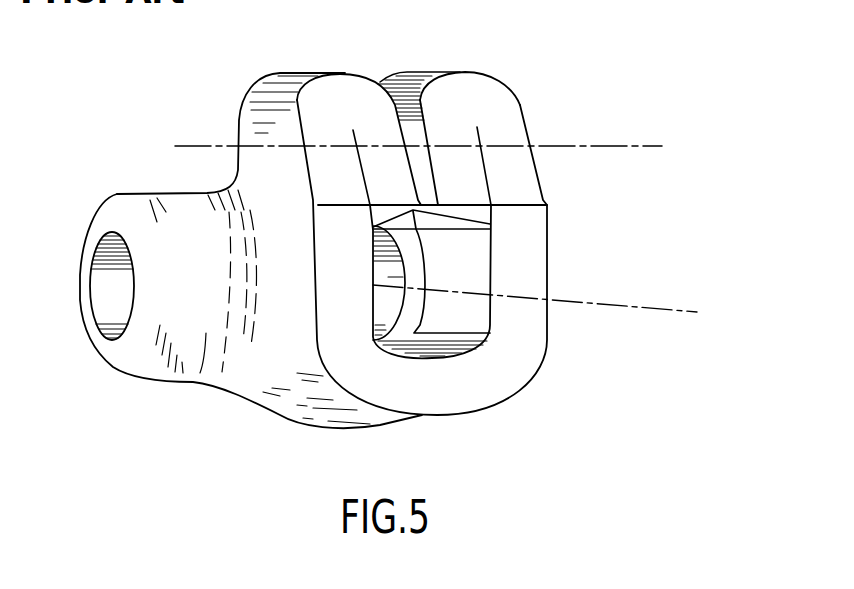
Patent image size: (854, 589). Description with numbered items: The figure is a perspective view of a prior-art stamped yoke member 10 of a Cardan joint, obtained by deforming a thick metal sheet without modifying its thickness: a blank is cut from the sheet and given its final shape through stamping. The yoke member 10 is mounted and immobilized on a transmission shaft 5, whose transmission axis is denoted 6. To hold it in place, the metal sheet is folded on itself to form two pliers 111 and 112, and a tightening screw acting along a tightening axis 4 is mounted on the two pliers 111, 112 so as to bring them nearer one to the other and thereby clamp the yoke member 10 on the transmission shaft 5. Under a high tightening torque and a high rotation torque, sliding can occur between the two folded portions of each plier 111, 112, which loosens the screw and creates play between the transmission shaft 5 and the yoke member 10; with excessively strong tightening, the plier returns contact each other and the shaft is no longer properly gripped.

The yoke member 10 is at (122, 168).
The plier 111 is at (343, 97).
The plier 112 is at (475, 95).
The tightening axis 4 is at (622, 146).
The transmission shaft 5 is at (445, 273).
The transmission axis 6 is at (670, 310).